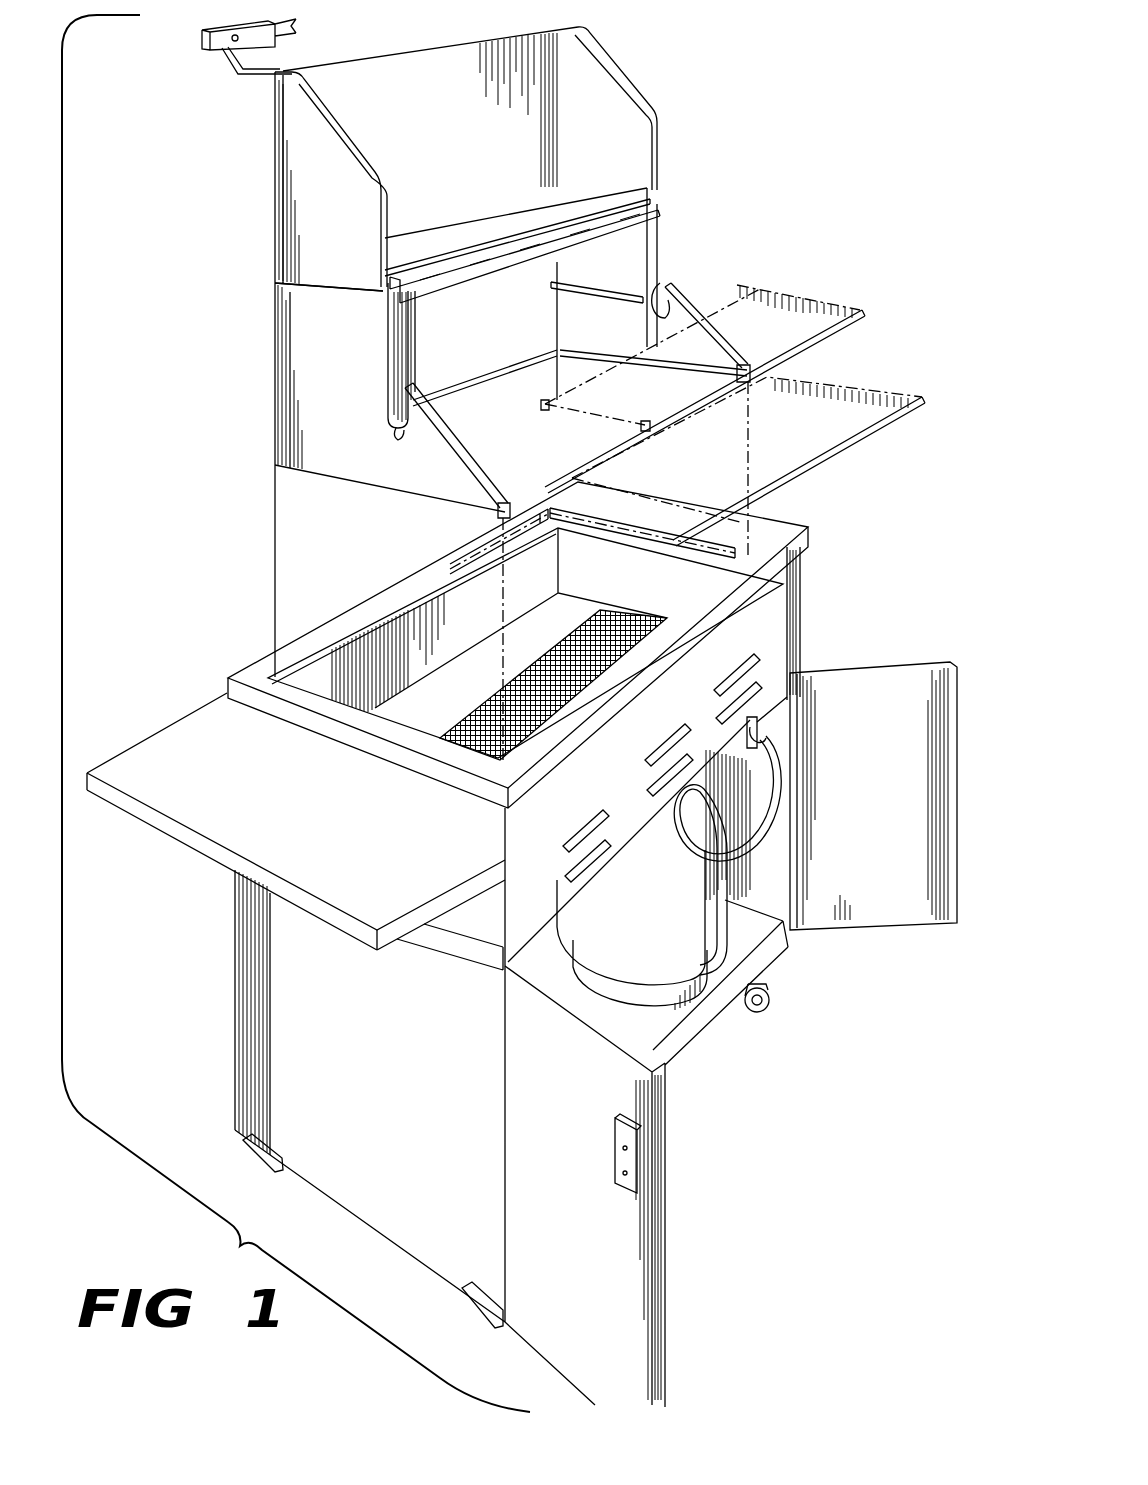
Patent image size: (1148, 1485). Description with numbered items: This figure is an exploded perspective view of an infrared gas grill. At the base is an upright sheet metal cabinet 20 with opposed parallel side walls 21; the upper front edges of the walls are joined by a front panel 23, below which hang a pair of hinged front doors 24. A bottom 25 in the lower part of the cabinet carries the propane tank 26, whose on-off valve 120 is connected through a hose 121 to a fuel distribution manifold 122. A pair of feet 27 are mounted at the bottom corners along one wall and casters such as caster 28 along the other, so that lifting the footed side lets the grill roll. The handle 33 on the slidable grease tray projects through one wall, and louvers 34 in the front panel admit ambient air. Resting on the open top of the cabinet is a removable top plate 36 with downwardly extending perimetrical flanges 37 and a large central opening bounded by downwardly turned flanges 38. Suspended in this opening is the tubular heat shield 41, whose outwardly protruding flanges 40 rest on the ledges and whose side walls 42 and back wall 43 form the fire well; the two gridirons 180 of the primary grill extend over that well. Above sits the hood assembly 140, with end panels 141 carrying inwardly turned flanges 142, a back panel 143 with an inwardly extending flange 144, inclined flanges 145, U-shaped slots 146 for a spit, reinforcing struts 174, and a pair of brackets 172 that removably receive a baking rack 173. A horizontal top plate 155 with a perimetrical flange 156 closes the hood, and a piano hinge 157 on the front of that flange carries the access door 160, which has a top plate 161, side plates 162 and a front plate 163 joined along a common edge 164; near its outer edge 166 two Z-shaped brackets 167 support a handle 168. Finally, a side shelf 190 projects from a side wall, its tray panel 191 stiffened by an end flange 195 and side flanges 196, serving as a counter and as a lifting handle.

The cabinet 20 is at (234, 936).
The side walls 21 is at (253, 1063).
The front panel 23 is at (797, 610).
The front doors 24 is at (893, 917).
The bottom 25 is at (675, 1038).
The propane tank 26 is at (683, 905).
The feet 27 is at (257, 1160).
The caster 28 is at (762, 1010).
The handle 33 is at (488, 957).
The louvers 34 is at (613, 808).
The top plate 36 is at (345, 611).
The perimetrical flanges 37 is at (422, 767).
The downwardly turned flanges 38 is at (390, 608).
The outwardly protruding flanges 40 is at (442, 592).
The heat shield 41 is at (517, 565).
The side walls of shield 42 is at (620, 553).
The back wall of shield 43 is at (473, 592).
The on-off valve 120 is at (707, 747).
The hose 121 is at (767, 767).
The fuel distribution manifold 122 is at (757, 717).
The hood assembly 140 is at (270, 310).
The end panels 141 is at (290, 418).
The inwardly turned flanges 142 is at (573, 360).
The back panel 143 is at (510, 308).
The inwardly extending flange 144 is at (502, 372).
The inclined flanges 145 is at (684, 291).
The U-shaped slots 146 is at (662, 282).
The top plate of hood 155 is at (356, 284).
The perimetrical flange 156 is at (317, 278).
The piano hinge 157 is at (500, 248).
The access door 160 is at (272, 203).
The top plate of access door 161 is at (522, 206).
The side plates 162 is at (347, 157).
The front plate 163 is at (381, 67).
The common edge 164 is at (463, 222).
The outer edge 166 is at (471, 44).
The handle carrying brackets 167 is at (240, 70).
The handle 168 is at (204, 42).
The brackets 172 is at (577, 280).
The baking rack 173 is at (783, 294).
The reinforcing struts 174 is at (651, 243).
The gridirons 180 is at (833, 387).
The side shelf 190 is at (188, 731).
The tray panel 191 is at (197, 817).
The end flange 195 is at (220, 855).
The side flanges 196 is at (400, 925).